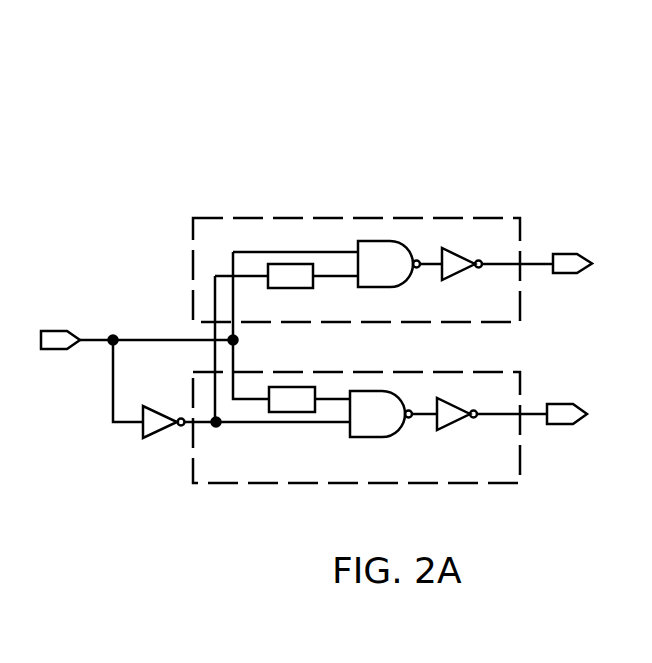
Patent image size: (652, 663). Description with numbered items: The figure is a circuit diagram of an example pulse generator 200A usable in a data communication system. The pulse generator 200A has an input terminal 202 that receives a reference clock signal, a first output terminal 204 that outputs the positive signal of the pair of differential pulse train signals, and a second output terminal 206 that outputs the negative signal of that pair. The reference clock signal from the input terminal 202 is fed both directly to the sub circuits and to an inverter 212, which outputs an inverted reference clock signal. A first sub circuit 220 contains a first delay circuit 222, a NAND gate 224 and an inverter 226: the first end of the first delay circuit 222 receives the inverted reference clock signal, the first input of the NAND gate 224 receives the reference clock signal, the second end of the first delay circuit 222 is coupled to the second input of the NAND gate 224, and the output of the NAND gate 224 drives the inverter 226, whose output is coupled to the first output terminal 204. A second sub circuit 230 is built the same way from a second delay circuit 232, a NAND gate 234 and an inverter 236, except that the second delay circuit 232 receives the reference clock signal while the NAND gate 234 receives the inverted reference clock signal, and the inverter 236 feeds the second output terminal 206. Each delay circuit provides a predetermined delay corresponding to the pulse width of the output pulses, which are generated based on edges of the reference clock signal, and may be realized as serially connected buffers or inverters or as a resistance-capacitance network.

The pulse generator 200A is at (557, 140).
The input terminal 202 is at (55, 338).
The first output terminal 204 is at (580, 268).
The second output terminal 206 is at (570, 417).
The inverter 212 is at (157, 435).
The first sub circuit 220 is at (520, 240).
The first delay circuit 222 is at (287, 270).
The NAND gate 224 is at (387, 255).
The inverter 226 is at (457, 252).
The second sub circuit 230 is at (520, 458).
The second delay circuit 232 is at (312, 405).
The NAND gate 234 is at (380, 422).
The inverter 236 is at (457, 420).